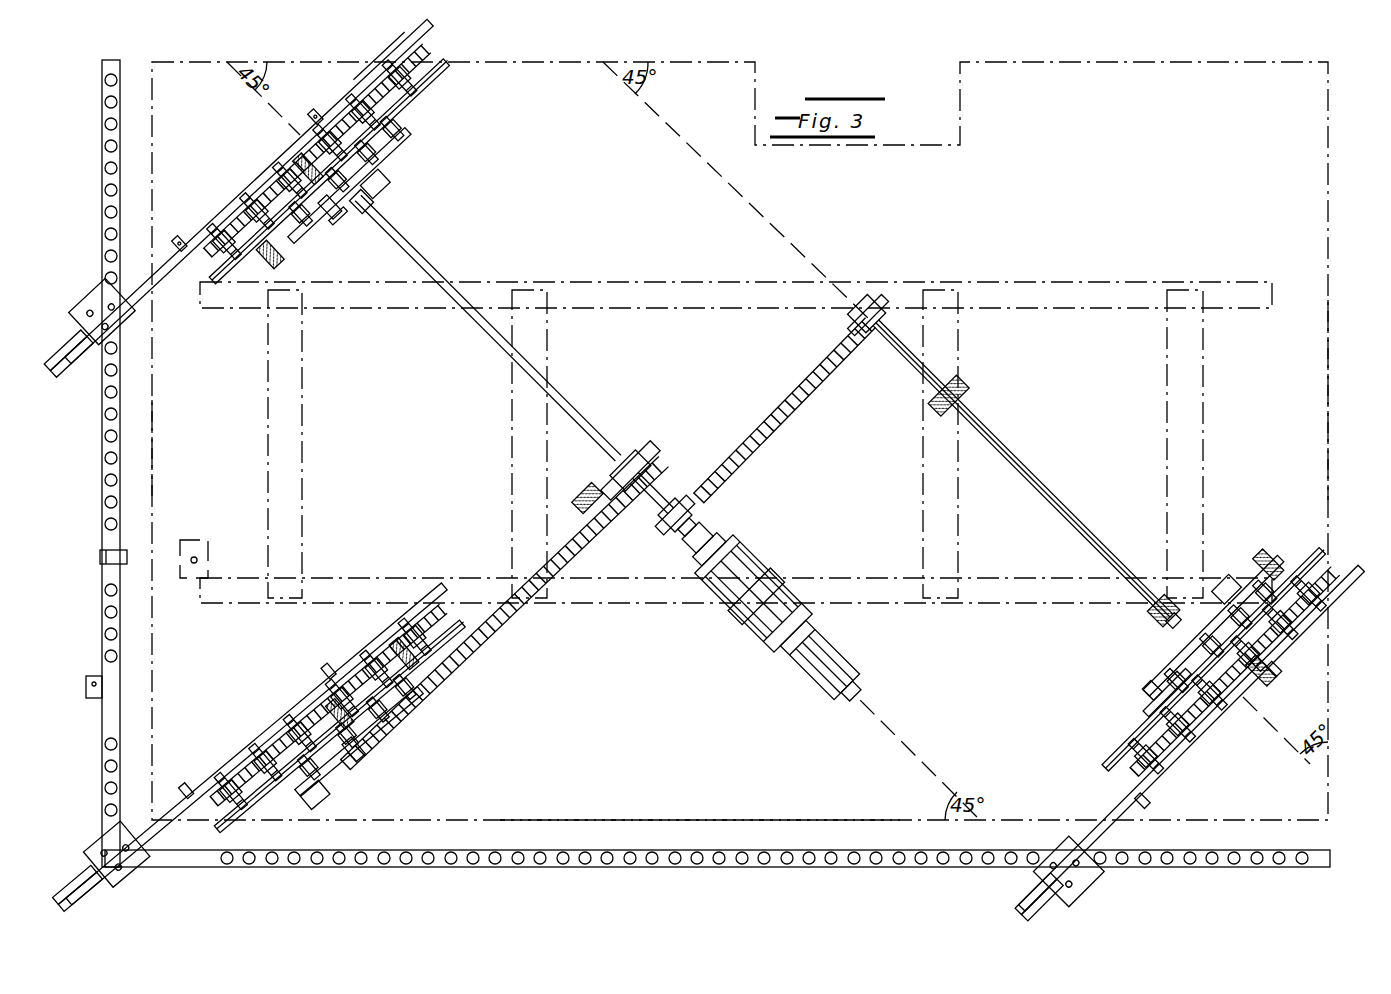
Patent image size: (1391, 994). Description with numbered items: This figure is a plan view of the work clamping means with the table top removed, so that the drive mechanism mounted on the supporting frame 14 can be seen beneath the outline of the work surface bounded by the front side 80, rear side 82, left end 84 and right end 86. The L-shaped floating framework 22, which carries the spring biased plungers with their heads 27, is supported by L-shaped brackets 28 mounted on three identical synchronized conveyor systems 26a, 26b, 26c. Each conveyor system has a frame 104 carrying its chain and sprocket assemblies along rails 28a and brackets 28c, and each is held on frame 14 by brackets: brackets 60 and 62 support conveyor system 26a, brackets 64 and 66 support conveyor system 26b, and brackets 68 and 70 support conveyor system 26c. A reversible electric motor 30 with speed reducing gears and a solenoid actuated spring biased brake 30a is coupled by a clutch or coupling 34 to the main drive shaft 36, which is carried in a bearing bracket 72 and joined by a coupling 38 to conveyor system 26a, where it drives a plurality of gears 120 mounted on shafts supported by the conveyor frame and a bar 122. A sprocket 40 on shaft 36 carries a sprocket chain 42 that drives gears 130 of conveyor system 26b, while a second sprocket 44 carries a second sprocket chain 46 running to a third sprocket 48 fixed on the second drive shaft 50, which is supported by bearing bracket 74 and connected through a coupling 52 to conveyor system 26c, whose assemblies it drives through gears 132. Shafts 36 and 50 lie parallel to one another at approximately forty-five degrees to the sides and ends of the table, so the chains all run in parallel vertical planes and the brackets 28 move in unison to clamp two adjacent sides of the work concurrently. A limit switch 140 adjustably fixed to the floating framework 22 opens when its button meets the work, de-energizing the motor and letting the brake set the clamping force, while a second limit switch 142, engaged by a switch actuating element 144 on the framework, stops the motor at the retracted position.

The supporting frame 14 is at (1070, 280).
The L-shaped floating framework 22 is at (102, 180).
The conveyor system 26a is at (388, 48).
The conveyor system 26b is at (412, 562).
The conveyor system 26c is at (1378, 536).
The head 27 is at (106, 256).
The L-shaped bracket 28 is at (78, 365).
The rail 28a is at (250, 190).
The bracket 28c is at (326, 88).
The electric motor 30 is at (790, 562).
The solenoid actuated spring biased brake 30a is at (852, 658).
The coupling 34 is at (722, 528).
The main drive shaft 36 is at (448, 262).
The coupling 38 is at (392, 212).
The sprocket 40 is at (664, 460).
The sprocket chain 42 is at (518, 628).
The second sprocket 44 is at (690, 500).
The second sprocket chain 46 is at (800, 430).
The third sprocket 48 is at (862, 326).
The second drive shaft 50 is at (1012, 462).
The coupling 52 is at (1162, 624).
The bracket 60 is at (268, 262).
The bracket 62 is at (300, 150).
The bracket 64 is at (416, 660).
The bracket 66 is at (322, 700).
The bracket 68 is at (1256, 545).
The bracket 70 is at (1240, 680).
The bracket 72 is at (604, 484).
The bracket 74 is at (958, 404).
The front side 80 is at (712, 822).
The rear side 82 is at (562, 64).
The left end 84 is at (152, 450).
The right end 86 is at (1332, 410).
The frame 104 is at (428, 78).
The gears 120 is at (340, 222).
The bar 122 is at (392, 180).
The gears 130 is at (352, 760).
The gears 132 is at (1150, 660).
The limit switch 140 is at (86, 698).
The second limit switch 142 is at (195, 540).
The switch actuating element 144 is at (100, 560).